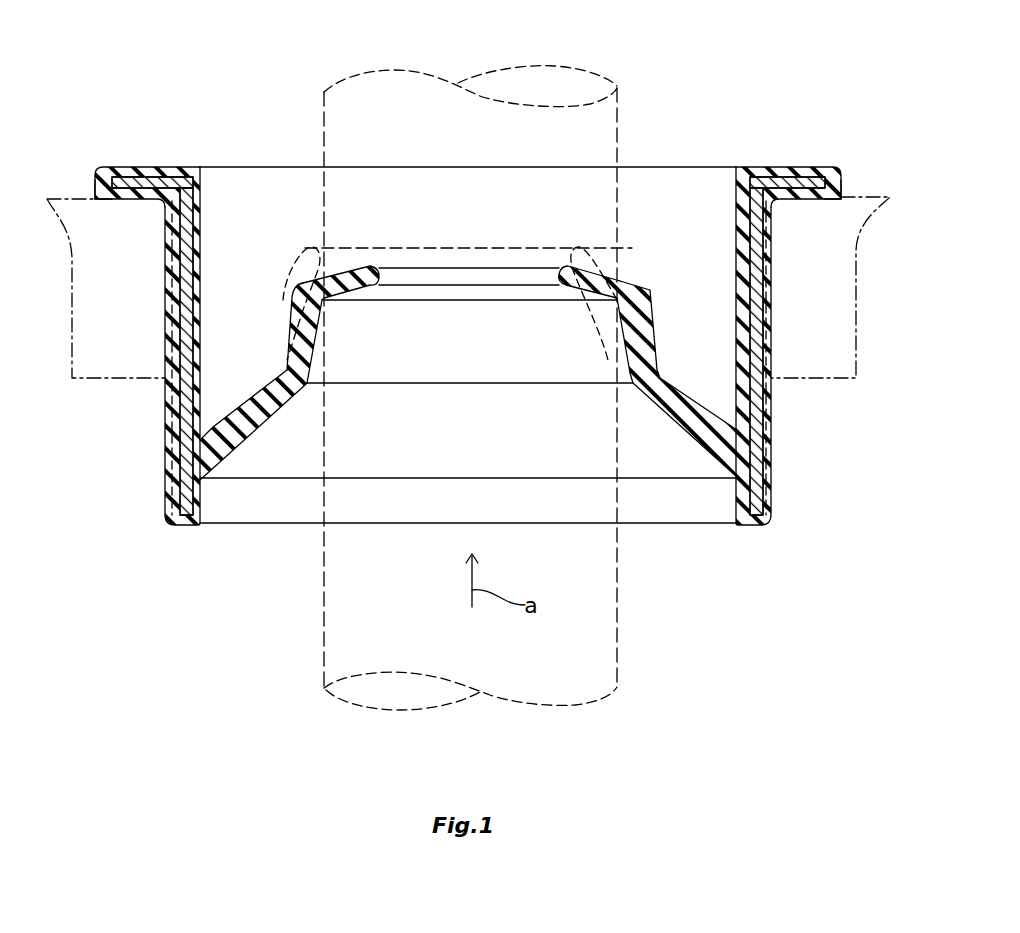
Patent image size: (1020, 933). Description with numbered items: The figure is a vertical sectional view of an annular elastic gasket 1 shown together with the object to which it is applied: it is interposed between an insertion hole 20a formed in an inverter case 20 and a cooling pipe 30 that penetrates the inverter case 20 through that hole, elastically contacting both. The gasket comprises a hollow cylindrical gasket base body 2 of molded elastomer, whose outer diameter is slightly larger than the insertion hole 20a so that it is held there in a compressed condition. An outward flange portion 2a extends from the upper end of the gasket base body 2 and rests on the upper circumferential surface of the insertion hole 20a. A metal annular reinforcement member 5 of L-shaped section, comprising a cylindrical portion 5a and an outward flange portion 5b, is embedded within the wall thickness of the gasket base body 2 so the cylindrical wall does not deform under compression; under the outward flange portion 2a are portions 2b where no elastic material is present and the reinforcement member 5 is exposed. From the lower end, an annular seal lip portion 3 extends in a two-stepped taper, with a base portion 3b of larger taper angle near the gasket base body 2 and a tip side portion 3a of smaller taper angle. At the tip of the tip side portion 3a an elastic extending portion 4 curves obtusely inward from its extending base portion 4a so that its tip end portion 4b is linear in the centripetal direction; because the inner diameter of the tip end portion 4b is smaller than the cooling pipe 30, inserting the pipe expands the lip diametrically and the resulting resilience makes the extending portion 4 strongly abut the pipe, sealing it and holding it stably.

The annular elastic gasket 1 is at (781, 144).
The gasket base body 2 is at (737, 228).
The outward flange portion 2a is at (157, 177).
The portion without elastic material 2b is at (137, 197).
The annular seal lip portion 3 is at (675, 370).
The tip side portion 3a is at (283, 335).
The base portion 3b is at (253, 422).
The annular extending portion 4 is at (592, 270).
The extending base portion 4a is at (660, 307).
The tip end portion 4b is at (560, 270).
The annular reinforcement member 5 is at (168, 115).
The cylindrical portion 5a is at (187, 260).
The outward flange portion 5b is at (178, 185).
The inverter case 20 is at (798, 380).
The insertion hole 20a is at (170, 412).
The cooling pipe 30 is at (617, 605).